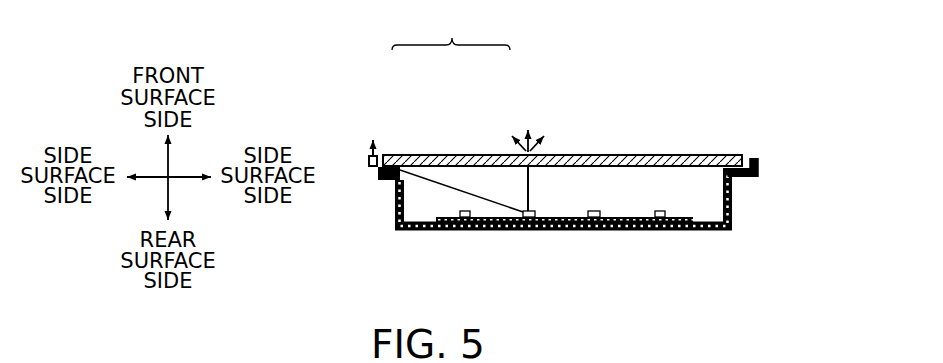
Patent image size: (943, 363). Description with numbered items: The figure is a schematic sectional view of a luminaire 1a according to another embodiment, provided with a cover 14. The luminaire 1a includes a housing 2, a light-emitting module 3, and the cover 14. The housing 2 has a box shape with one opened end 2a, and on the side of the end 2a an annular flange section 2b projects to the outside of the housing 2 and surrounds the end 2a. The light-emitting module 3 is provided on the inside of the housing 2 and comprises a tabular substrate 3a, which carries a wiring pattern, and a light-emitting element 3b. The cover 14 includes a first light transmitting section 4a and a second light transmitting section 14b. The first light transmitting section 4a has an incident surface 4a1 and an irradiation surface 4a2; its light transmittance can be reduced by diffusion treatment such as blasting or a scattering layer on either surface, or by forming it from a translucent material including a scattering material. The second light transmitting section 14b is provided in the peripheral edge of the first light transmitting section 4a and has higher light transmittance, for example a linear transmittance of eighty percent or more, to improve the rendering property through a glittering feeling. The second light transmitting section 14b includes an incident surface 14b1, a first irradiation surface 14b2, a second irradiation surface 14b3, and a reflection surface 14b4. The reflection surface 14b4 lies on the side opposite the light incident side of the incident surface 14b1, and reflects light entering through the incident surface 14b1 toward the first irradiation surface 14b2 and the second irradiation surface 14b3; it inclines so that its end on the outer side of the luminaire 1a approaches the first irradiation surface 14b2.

The luminaire 1a is at (754, 74).
The housing 2 is at (733, 234).
The end 2a is at (757, 160).
The flange section 2b is at (749, 182).
The light-emitting module 3 is at (640, 310).
The substrate 3a is at (562, 223).
The light-emitting element 3b is at (595, 223).
The first light transmitting section 4a is at (481, 157).
The incident surface 4a1 is at (684, 169).
The irradiation surface 4a2 is at (657, 153).
The cover 14 is at (451, 29).
The second light transmitting section 14b is at (381, 156).
The incident surface 14b1 is at (402, 178).
The first irradiation surface 14b2 is at (367, 151).
The second irradiation surface 14b3 is at (366, 162).
The reflection surface 14b4 is at (376, 178).